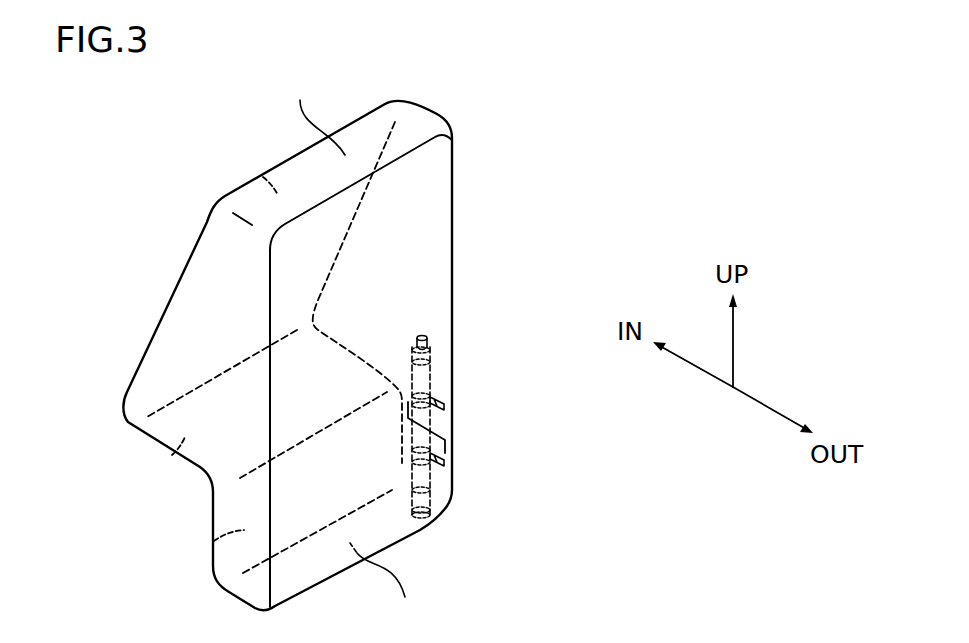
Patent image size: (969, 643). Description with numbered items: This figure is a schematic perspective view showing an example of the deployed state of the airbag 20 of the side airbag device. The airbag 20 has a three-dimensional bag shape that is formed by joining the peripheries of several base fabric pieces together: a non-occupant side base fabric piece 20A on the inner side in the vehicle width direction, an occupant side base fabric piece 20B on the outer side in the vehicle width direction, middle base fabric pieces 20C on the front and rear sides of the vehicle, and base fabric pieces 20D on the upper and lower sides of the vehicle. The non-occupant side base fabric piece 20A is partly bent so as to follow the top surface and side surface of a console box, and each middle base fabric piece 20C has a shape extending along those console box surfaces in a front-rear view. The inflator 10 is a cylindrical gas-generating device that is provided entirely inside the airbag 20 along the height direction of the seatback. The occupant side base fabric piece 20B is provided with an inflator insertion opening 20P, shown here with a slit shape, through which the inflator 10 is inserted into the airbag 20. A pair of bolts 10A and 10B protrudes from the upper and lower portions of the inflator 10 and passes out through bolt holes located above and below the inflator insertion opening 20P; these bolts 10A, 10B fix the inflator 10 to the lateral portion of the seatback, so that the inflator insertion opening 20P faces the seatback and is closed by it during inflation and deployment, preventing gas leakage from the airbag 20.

The airbag 20 is at (131, 166).
The non-occupant side base fabric piece 20A is at (262, 173).
The occupant side base fabric piece 20B is at (412, 288).
The middle base fabric pieces 20C is at (197, 312).
The base fabric pieces on the upper and lower sides 20D is at (353, 351).
The inflator insertion opening 20P is at (446, 440).
The inflator 10 is at (423, 380).
The bolt 10A is at (446, 404).
The bolt 10B is at (446, 462).